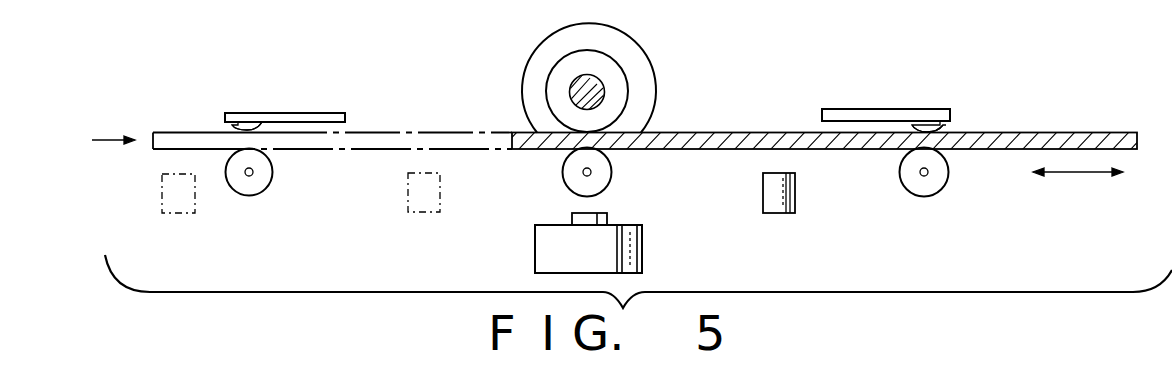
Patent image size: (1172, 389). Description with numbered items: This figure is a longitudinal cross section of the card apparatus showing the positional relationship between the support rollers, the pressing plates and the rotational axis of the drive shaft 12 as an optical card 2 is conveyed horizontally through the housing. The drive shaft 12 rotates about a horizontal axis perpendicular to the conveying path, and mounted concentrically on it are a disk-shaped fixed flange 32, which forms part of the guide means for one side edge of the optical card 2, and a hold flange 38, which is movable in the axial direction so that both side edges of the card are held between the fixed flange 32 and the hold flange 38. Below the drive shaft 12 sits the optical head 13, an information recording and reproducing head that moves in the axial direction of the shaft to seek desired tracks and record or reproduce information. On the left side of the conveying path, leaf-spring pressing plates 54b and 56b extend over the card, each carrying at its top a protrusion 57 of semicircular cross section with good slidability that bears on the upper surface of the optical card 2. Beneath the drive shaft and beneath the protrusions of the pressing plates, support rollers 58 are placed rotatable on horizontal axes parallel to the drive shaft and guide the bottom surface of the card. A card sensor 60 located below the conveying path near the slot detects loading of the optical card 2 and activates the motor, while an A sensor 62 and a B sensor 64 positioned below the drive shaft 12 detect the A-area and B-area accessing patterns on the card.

The optical card 2 is at (193, 130).
The drive shaft 12 is at (603, 102).
The optical head 13 is at (535, 250).
The fixed flange 32 is at (635, 42).
The hold flange 38 is at (627, 82).
The pressing plate 54b is at (878, 109).
The pressing plate 56b is at (318, 113).
The protrusion 57 is at (237, 127).
The support roller 58 is at (272, 184).
The card sensor 60 is at (195, 214).
The A sensor 62 is at (430, 213).
The B sensor 64 is at (783, 213).